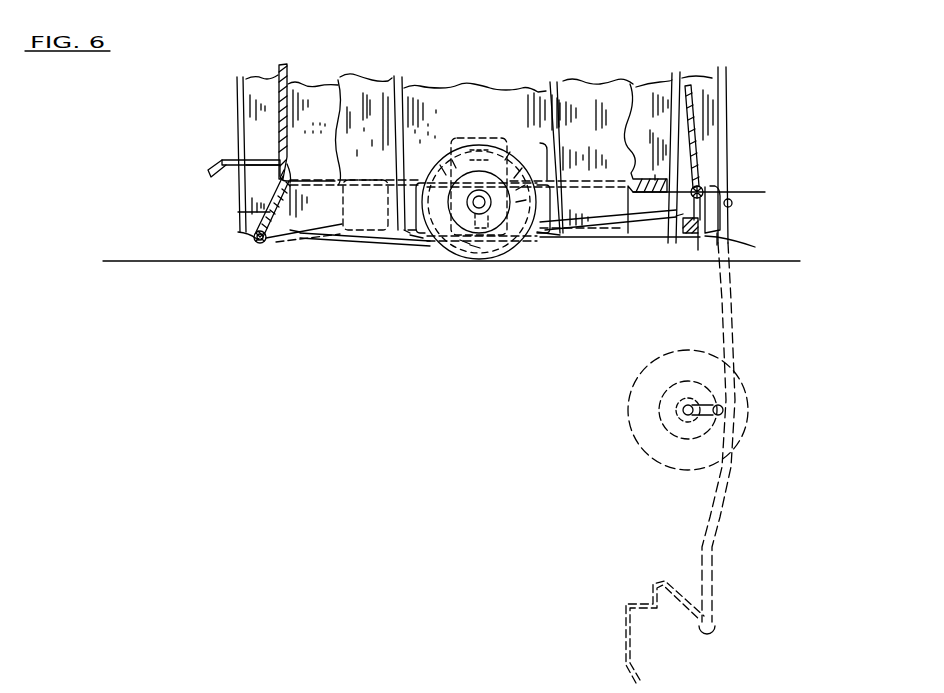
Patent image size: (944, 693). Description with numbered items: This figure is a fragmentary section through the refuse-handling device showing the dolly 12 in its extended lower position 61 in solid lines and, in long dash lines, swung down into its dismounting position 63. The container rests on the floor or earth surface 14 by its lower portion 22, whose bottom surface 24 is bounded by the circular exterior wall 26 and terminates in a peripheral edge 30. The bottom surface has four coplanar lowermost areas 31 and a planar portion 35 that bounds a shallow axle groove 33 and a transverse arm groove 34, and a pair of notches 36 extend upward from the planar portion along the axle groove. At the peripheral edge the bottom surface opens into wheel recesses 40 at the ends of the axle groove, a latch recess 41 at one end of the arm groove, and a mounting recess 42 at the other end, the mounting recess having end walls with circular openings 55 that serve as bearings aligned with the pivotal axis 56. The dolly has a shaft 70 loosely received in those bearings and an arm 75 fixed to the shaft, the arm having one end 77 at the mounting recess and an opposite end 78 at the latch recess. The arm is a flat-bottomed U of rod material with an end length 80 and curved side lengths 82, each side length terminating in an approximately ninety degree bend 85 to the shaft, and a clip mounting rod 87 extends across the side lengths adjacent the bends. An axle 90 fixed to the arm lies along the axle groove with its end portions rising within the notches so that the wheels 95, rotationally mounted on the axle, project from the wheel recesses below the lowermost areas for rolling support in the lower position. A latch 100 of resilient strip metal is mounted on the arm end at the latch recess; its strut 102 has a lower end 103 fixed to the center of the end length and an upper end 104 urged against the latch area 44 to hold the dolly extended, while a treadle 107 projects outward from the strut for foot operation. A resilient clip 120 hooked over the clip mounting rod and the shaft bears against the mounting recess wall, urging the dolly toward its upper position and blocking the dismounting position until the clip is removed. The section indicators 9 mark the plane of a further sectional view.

The section line 9 is at (639, 191).
The dolly 12 is at (415, 247).
The floor or earth surface 14 is at (148, 259).
The lower portion 22 is at (732, 68).
The bottom surface 24 is at (593, 238).
The exterior wall 26 is at (238, 90).
The peripheral edge 30 is at (243, 230).
The coplanar areas 31 is at (611, 243).
The axle groove 33 is at (538, 221).
The arm groove 34 is at (331, 208).
The planar portion 35 is at (468, 202).
The notches 36 is at (500, 142).
The wheel recesses 40 is at (541, 182).
The latch recess 41 is at (266, 187).
The mounting recess 42 is at (680, 237).
The latch area 44 is at (295, 186).
The circular opening 55 is at (699, 190).
The pivotal axis 56 is at (698, 172).
The lower position 61 is at (308, 245).
The dismounting position 63 is at (714, 563).
The shaft 70 is at (709, 190).
The arm 75 is at (335, 237).
The arm end 77 is at (675, 212).
The opposite arm end 78 is at (285, 242).
The end length 80 is at (256, 243).
The side lengths 82 is at (328, 225).
The bend 85 is at (714, 210).
The clip mounting rod 87 is at (683, 237).
The axle 90 is at (483, 206).
The wheels 95 is at (457, 247).
The latch 100 is at (254, 156).
The strut 102 is at (285, 207).
The lower end 103 is at (265, 247).
The upper end 104 is at (285, 137).
The treadle 107 is at (213, 163).
The resilient clip 120 is at (690, 116).